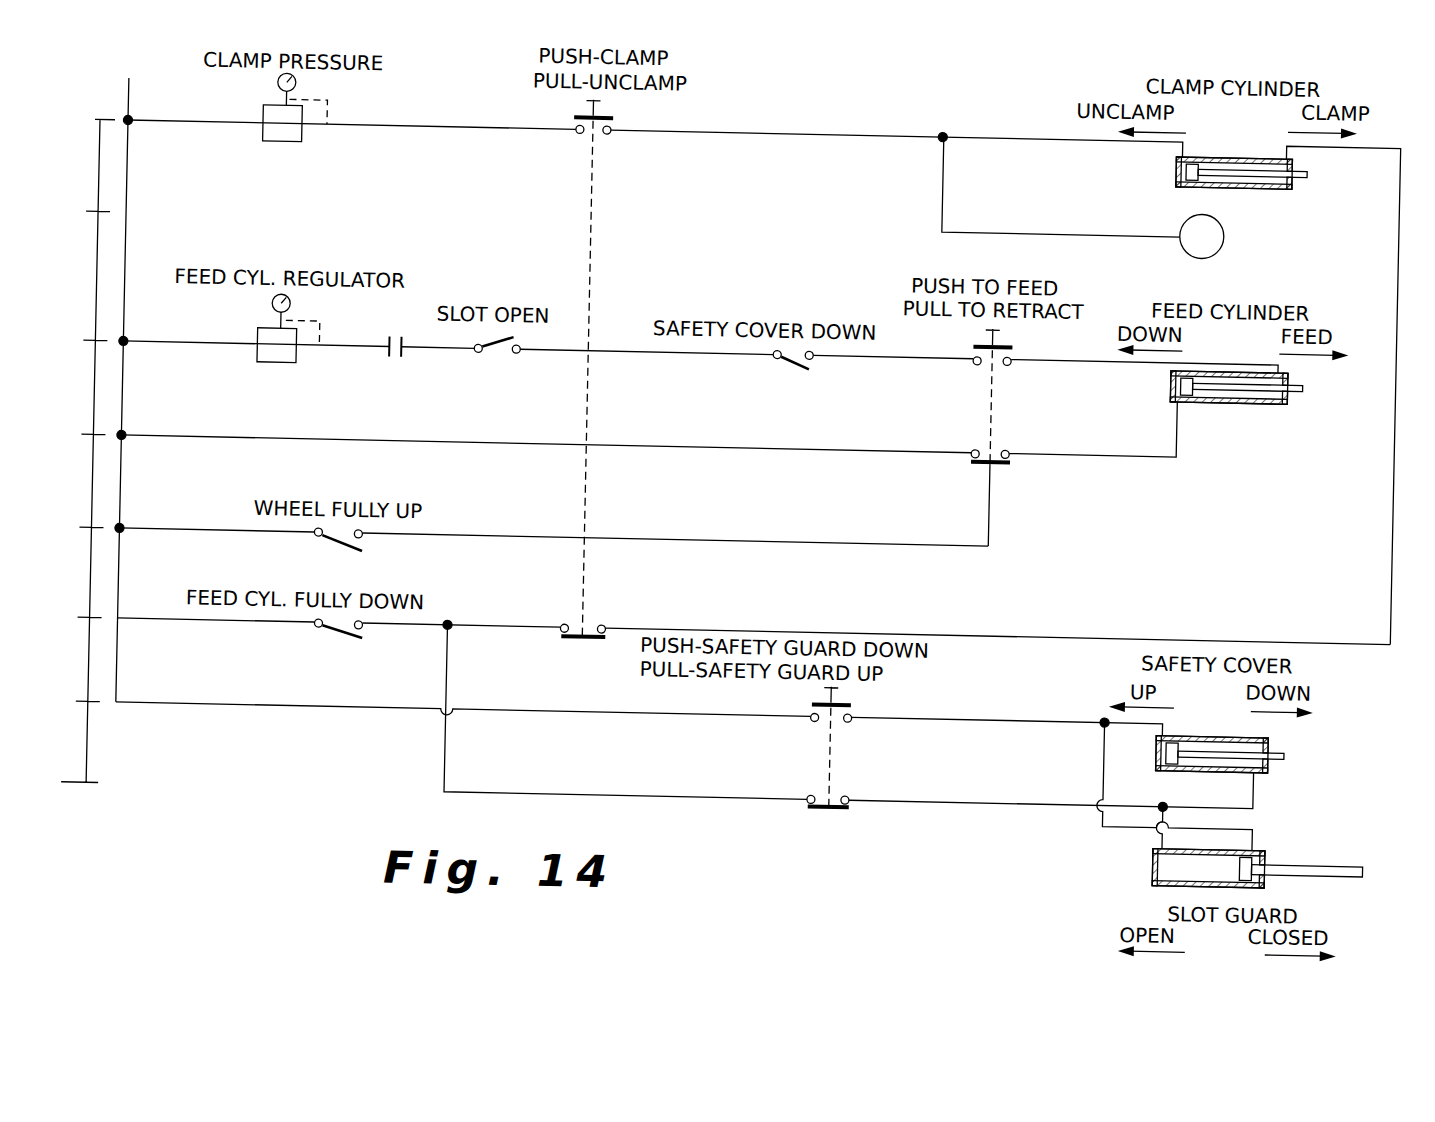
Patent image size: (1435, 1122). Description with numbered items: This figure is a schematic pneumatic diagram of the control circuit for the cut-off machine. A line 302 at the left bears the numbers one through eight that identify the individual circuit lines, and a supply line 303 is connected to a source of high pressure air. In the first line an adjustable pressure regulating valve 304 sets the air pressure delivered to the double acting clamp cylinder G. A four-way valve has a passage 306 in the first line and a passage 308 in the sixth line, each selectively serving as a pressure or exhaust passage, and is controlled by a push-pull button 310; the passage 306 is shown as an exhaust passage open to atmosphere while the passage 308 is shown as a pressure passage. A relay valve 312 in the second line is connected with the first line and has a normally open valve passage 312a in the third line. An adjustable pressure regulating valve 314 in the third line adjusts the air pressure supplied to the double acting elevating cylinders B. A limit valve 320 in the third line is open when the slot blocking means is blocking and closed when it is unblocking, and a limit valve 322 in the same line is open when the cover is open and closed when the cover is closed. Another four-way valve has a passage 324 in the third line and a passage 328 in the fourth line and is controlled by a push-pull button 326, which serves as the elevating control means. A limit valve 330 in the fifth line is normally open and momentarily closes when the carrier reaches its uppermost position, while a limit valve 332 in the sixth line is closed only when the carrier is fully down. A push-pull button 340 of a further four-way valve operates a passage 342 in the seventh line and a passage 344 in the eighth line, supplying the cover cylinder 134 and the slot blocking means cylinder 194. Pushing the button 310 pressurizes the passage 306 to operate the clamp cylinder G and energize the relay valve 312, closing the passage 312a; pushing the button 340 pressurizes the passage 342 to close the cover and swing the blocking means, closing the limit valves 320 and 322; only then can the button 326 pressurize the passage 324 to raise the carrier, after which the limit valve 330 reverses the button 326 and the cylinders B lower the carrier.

The line 302 is at (100, 173).
The supply line 303 is at (130, 97).
The adjustable pressure regulating valve 304 is at (290, 130).
The passage 306 is at (609, 125).
The push-pull button 310 is at (601, 93).
The relay valve 312 is at (1226, 217).
The adjustable pressure regulating valve 314 is at (274, 360).
The normally open valve passage 312a is at (398, 356).
The limit valve 320 is at (500, 348).
The limit valve 322 is at (790, 356).
The passage 324 is at (1014, 348).
The push-pull button 326 is at (1005, 313).
The passage 328 is at (1003, 449).
The limit valve 330 is at (338, 543).
The limit valve 332 is at (343, 637).
The passage 308 is at (614, 612).
The push-pull button 340 is at (851, 675).
The passage 342 is at (862, 708).
The passage 344 is at (861, 781).
The double acting pneumatic cylinder 134 is at (1208, 708).
The pneumatic cylinder 194 is at (1290, 826).
The pneumatic cylinder G is at (1234, 132).
The double acting fluid cylinder B is at (1242, 388).